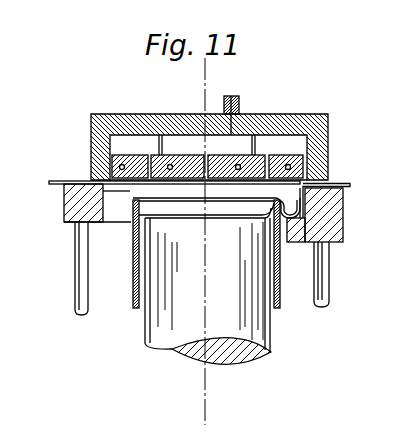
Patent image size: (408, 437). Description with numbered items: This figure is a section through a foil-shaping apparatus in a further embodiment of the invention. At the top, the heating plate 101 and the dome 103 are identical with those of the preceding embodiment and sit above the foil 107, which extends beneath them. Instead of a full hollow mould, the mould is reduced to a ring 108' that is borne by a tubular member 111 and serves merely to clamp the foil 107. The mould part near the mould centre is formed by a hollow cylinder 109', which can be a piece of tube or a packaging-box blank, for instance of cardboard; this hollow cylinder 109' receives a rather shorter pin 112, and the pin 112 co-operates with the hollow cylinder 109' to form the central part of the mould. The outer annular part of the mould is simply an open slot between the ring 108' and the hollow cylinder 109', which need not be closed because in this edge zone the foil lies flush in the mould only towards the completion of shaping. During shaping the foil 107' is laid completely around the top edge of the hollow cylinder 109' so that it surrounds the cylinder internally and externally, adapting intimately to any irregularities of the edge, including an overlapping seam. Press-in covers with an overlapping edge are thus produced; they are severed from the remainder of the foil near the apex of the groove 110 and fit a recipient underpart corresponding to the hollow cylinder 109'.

The heating plate 101 is at (290, 156).
The dome 103 is at (256, 118).
The foil 107 is at (166, 162).
The foil 107' is at (336, 177).
The ring 108' is at (342, 237).
The hollow cylinder 109' is at (205, 288).
The groove 110 is at (327, 296).
The tubular member 111 is at (301, 246).
The pin 112 is at (243, 352).